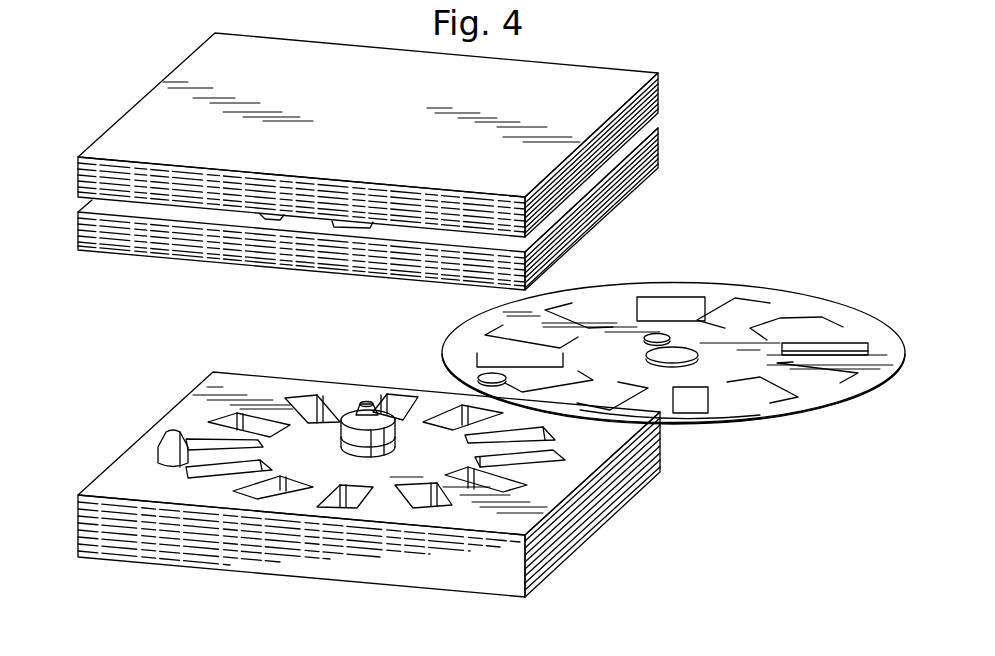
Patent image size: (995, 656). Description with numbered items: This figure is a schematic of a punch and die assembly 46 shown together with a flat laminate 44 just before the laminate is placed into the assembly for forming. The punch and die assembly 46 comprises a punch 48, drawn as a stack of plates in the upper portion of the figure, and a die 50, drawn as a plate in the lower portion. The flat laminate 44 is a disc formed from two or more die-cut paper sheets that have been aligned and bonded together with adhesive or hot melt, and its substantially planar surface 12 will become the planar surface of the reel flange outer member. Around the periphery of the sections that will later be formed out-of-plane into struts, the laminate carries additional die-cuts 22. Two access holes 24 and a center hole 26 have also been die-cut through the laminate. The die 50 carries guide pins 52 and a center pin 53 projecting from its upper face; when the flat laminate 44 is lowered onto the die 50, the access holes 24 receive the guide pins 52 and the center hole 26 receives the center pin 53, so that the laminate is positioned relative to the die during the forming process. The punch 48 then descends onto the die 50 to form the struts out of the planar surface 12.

The planar surface 12 is at (806, 392).
The die-cuts 22 is at (822, 342).
The access holes 24 is at (662, 334).
The center hole 26 is at (683, 347).
The flat laminate 44 is at (692, 428).
The punch and die assembly 46 is at (68, 510).
The punch 48 is at (620, 80).
The die 50 is at (477, 572).
The guide pins 52 is at (358, 410).
The center pin 53 is at (383, 407).